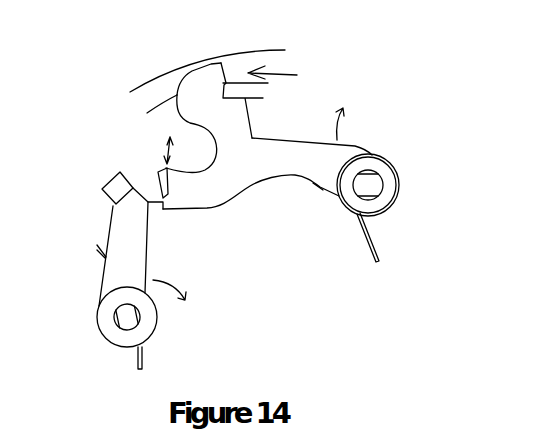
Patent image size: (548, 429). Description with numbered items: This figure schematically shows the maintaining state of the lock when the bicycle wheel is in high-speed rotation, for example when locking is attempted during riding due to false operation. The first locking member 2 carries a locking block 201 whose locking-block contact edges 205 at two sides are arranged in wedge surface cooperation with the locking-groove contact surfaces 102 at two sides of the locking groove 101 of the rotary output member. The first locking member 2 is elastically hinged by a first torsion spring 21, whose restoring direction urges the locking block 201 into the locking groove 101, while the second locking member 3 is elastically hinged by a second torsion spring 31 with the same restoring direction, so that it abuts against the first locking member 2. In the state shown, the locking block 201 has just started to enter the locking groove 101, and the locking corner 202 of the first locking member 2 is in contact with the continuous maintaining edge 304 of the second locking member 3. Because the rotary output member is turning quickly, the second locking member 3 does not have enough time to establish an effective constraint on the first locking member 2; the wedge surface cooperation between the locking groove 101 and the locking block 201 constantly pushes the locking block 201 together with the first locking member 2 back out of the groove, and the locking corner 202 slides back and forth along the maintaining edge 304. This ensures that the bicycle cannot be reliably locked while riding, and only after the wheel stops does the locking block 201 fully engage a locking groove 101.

The first locking member 2 is at (263, 157).
The second locking member 3 is at (130, 213).
The first torsion spring 21 is at (365, 223).
The second torsion spring 31 is at (143, 355).
The locking groove 101 is at (197, 73).
The locking-groove contact surface 102 is at (228, 69).
The locking block 201 is at (200, 92).
The locking corner 202 is at (166, 208).
The locking-block contact edge 205 is at (228, 83).
The maintaining edge 304 is at (165, 193).